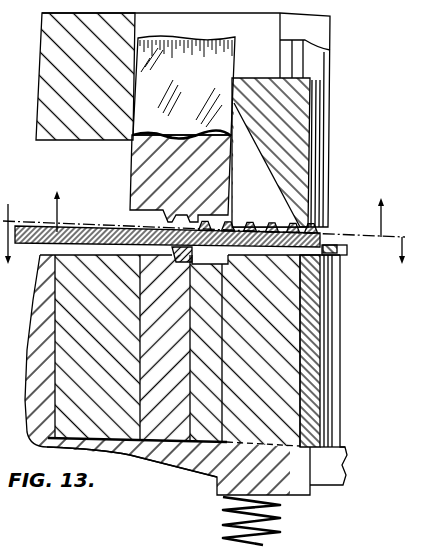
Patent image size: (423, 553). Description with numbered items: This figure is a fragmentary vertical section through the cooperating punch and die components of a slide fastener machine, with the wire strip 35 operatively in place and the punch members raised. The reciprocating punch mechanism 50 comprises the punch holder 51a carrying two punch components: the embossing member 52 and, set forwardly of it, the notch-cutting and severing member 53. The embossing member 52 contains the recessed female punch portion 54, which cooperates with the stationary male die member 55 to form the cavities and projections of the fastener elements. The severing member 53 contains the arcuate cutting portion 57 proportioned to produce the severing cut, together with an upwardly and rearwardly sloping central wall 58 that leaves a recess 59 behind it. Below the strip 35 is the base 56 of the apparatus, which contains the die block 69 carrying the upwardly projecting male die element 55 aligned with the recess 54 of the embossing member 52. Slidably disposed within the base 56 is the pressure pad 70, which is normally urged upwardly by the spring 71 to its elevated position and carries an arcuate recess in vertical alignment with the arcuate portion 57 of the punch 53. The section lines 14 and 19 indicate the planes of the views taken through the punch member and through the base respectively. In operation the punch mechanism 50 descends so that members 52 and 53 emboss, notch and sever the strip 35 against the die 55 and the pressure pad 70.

The reciprocating punch mechanism 50 is at (333, 31).
The punch holder 51a is at (80, 141).
The embossing member 52 is at (131, 177).
The notch-cutting and severing member 53 is at (331, 72).
The recessed female punch portion 54 is at (168, 230).
The stationary male die member 55 is at (176, 258).
The base 56 is at (29, 349).
The arcuate cutting portion 57 is at (300, 148).
The central wall 58 is at (305, 152).
The recess 59 is at (250, 160).
The die block 69 is at (165, 432).
The pressure pad 70 is at (292, 366).
The spring 71 is at (281, 520).
The wire strip 35 is at (48, 223).
The section line 14 is at (204, 214).
The section line 19 is at (205, 239).